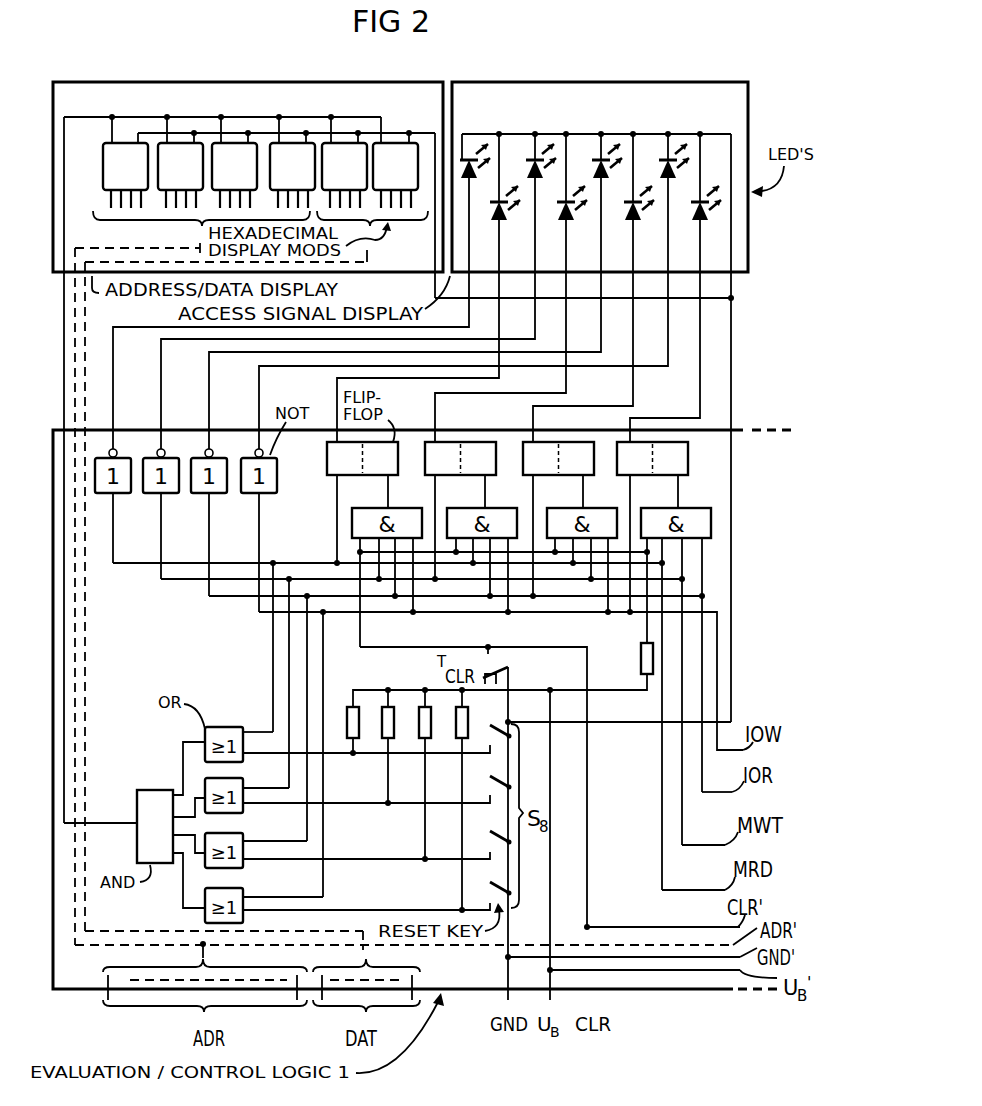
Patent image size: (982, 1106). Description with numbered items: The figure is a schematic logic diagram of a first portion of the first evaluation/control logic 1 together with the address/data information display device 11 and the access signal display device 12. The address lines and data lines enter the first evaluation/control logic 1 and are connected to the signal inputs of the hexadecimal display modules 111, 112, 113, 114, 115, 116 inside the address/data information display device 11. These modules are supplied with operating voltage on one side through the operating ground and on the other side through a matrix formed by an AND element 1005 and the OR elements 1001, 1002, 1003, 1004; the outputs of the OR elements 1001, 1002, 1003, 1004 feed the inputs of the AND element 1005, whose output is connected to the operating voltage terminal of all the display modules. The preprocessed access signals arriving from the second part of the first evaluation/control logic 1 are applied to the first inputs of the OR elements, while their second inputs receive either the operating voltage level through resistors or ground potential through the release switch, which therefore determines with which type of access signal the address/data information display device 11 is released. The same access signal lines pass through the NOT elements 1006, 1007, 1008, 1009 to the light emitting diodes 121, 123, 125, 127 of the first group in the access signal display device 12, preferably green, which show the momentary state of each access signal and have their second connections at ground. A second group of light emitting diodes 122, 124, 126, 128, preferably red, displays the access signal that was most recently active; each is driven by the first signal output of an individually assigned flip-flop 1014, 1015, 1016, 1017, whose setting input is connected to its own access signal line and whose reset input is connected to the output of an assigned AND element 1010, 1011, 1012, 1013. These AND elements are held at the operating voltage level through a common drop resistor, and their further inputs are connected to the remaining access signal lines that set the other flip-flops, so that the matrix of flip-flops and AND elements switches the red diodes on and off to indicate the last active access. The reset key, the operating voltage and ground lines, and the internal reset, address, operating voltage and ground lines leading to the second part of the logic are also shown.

The first evaluation/control logic 1 is at (758, 428).
The address/data information display device 11 is at (254, 83).
The access signal display device 12 is at (626, 83).
The hexadecimal display module 111 is at (128, 150).
The hexadecimal display module 112 is at (183, 150).
The hexadecimal display module 113 is at (240, 150).
The hexadecimal display module 114 is at (292, 150).
The hexadecimal display module 115 is at (343, 150).
The hexadecimal display module 116 is at (397, 150).
The light emitting diode of first group 121 is at (463, 156).
The light emitting diode of second group 122 is at (503, 198).
The light emitting diode of first group 123 is at (528, 156).
The light emitting diode of second group 124 is at (570, 198).
The light emitting diode of first group 125 is at (594, 156).
The light emitting diode of second group 126 is at (637, 198).
The light emitting diode of first group 127 is at (661, 156).
The light emitting diode of second group 128 is at (704, 198).
The OR element 1001 is at (220, 727).
The OR element 1002 is at (243, 791).
The OR element 1003 is at (243, 845).
The OR element 1004 is at (243, 899).
The AND element 1005 is at (156, 796).
The NOT element 1006 is at (127, 490).
The NOT element 1007 is at (175, 490).
The NOT element 1008 is at (223, 490).
The NOT element 1009 is at (273, 490).
The AND element 1010 is at (409, 480).
The AND element 1011 is at (507, 480).
The AND element 1012 is at (605, 480).
The AND element 1013 is at (699, 480).
The flip-flop 1014 is at (342, 476).
The flip-flop 1015 is at (440, 476).
The flip-flop 1016 is at (538, 476).
The flip-flop 1017 is at (632, 476).